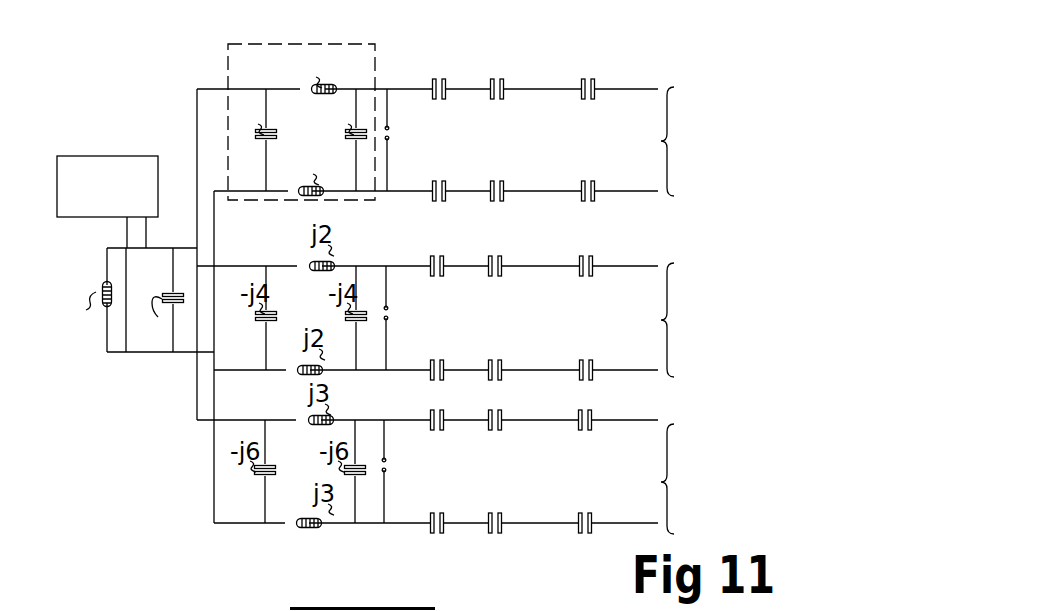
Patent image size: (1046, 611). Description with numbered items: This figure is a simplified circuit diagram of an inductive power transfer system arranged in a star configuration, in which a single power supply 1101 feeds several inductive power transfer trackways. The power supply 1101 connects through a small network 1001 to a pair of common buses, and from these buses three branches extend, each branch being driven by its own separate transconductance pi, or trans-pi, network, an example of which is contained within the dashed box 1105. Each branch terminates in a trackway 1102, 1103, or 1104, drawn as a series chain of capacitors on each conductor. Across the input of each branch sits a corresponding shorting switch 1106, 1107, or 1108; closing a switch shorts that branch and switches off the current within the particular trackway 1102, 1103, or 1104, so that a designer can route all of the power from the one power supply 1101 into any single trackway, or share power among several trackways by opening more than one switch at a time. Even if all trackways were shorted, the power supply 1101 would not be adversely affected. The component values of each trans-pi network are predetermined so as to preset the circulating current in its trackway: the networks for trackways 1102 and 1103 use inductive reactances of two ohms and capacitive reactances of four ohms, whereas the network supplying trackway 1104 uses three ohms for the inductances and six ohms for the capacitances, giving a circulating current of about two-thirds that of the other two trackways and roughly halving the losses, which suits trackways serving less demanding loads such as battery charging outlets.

The power supply 1101 is at (95, 156).
The impedance matching network 1001 is at (132, 300).
The box containing trans-pi network 1105 is at (270, 48).
The trackway 1102 is at (563, 140).
The trackway 1103 is at (563, 318).
The trackway 1104 is at (563, 472).
The shorting switch 1106 is at (388, 140).
The shorting switch 1107 is at (387, 320).
The shorting switch 1108 is at (385, 472).